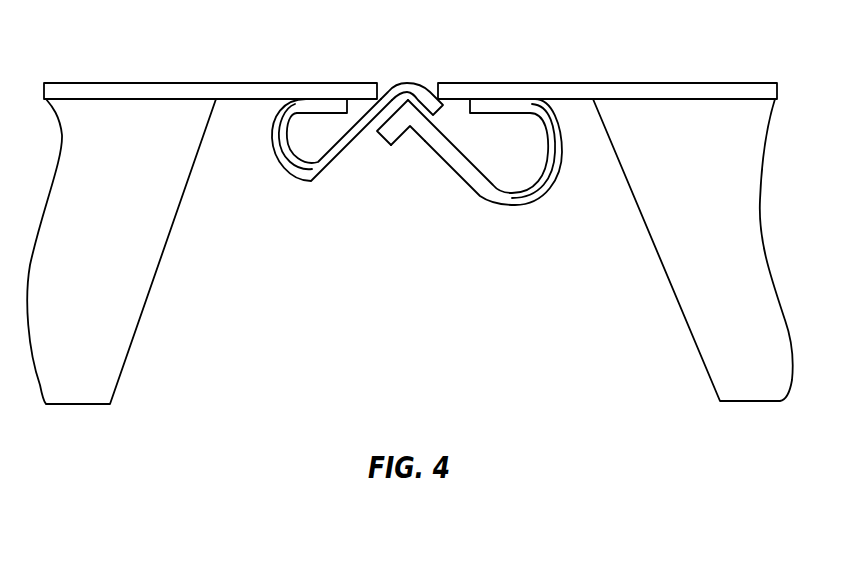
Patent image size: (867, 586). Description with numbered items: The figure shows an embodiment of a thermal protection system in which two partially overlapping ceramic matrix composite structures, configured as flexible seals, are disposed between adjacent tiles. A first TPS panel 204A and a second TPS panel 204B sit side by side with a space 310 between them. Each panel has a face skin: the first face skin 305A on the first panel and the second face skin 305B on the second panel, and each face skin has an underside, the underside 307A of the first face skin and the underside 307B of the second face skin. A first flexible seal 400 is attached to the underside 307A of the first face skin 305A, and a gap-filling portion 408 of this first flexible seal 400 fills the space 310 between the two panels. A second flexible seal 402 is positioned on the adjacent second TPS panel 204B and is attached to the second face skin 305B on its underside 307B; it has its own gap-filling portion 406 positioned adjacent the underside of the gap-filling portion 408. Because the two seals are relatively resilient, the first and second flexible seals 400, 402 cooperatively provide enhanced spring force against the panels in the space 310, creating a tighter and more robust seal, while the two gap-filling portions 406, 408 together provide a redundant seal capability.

The first TPS panel 204A is at (117, 236).
The second TPS panel 204B is at (733, 233).
The first face skin 305A is at (128, 84).
The second face skin 305B is at (693, 83).
The underside of the first face skin 307A is at (252, 103).
The underside of the second face skin 307B is at (567, 103).
The space between TPS panels 310 is at (432, 82).
The first flexible seal 400 is at (356, 150).
The second flexible seal 402 is at (472, 160).
The gap-filling portion of second flexible seal 406 is at (410, 128).
The gap-filling portion of first flexible seal 408 is at (405, 83).